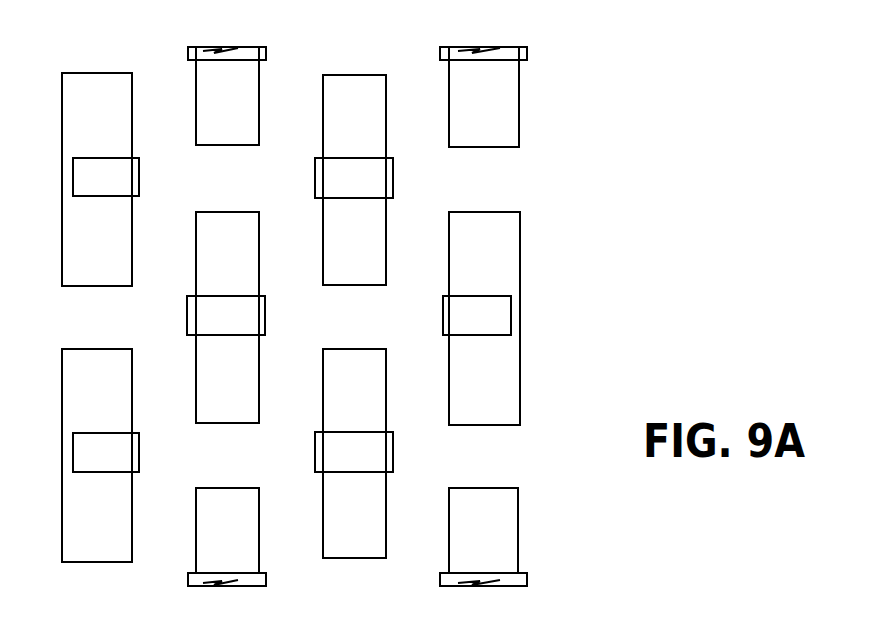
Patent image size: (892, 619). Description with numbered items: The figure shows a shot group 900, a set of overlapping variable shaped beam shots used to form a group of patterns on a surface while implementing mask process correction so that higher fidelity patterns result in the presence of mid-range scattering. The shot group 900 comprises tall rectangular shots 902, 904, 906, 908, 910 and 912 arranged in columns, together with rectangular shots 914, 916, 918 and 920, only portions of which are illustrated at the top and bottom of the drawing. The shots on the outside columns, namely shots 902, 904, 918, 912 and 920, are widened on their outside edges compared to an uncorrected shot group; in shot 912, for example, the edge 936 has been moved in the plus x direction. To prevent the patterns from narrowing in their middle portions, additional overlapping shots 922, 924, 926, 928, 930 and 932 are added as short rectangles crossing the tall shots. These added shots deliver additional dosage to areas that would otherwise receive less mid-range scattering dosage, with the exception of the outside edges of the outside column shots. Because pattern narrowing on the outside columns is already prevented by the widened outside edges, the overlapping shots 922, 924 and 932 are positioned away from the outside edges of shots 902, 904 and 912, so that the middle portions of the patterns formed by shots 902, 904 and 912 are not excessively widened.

The shot group 900 is at (730, 137).
The rectangular shot 902 is at (120, 73).
The rectangular shot 904 is at (118, 349).
The rectangular shot 906 is at (238, 212).
The rectangular shot 908 is at (368, 75).
The rectangular shot 910 is at (372, 349).
The rectangular shot 912 is at (520, 258).
The rectangular shot 914 is at (259, 68).
The rectangular shot 916 is at (259, 554).
The rectangular shot 918 is at (519, 88).
The rectangular shot 920 is at (518, 511).
The added overlapping shot 922 is at (139, 172).
The added overlapping shot 924 is at (139, 455).
The added overlapping shot 926 is at (265, 306).
The added overlapping shot 928 is at (393, 177).
The added overlapping shot 930 is at (393, 457).
The added overlapping shot 932 is at (511, 314).
The edge 936 is at (520, 372).